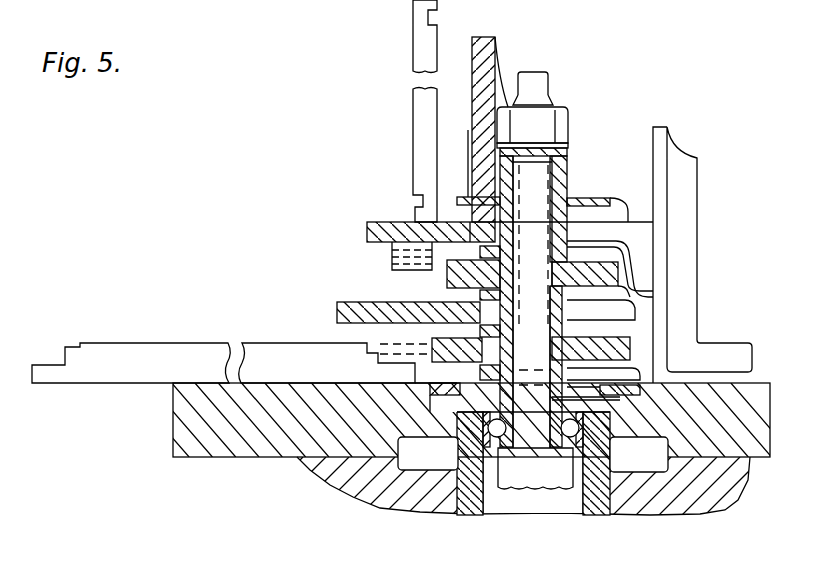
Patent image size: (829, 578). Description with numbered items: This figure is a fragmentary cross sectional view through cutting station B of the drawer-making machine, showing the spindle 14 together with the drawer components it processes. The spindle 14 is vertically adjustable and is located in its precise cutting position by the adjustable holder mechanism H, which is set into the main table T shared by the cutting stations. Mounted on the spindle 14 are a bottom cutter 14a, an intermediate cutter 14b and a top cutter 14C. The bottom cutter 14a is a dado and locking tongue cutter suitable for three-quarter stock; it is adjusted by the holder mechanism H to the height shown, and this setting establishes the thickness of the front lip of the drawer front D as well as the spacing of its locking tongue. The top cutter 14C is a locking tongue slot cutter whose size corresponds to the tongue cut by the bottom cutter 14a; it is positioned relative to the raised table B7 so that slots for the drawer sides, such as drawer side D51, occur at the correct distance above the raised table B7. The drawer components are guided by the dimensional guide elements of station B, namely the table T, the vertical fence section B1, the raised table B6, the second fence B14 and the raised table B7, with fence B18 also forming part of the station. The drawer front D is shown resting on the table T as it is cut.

The slide bar D51 is at (430, 50).
The bracket bar B18 is at (482, 95).
The top cutter 14C is at (467, 194).
The spindle 14 is at (540, 178).
The second fence B14 is at (472, 200).
The raised table B7 is at (364, 243).
The intermediate cutter 14b is at (456, 273).
The raised table B6 is at (341, 320).
The bottom cutter 14a is at (446, 335).
The drawer front D is at (274, 347).
The vertical fence section B1 is at (507, 390).
The table T is at (226, 446).
The adjustable holder mechanism H is at (470, 506).